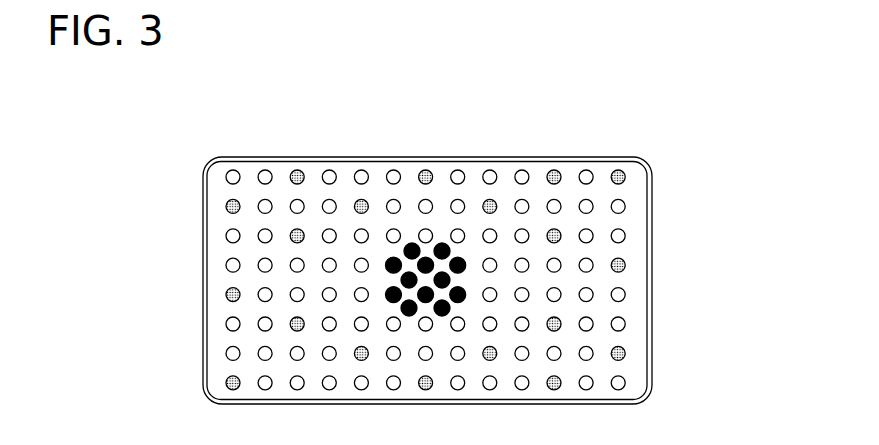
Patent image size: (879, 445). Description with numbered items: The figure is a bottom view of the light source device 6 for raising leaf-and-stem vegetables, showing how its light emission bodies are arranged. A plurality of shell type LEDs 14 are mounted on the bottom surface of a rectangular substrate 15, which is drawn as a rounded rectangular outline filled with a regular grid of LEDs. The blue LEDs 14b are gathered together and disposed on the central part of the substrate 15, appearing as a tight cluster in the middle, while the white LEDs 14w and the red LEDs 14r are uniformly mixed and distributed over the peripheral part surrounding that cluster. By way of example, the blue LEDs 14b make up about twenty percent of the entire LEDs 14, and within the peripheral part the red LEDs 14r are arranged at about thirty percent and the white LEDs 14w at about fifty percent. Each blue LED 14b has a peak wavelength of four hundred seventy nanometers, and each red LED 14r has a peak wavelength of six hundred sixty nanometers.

The light source device 6 is at (205, 148).
The shell type LEDs 14 is at (483, 112).
The white LEDs 14w is at (270, 229).
The blue LEDs 14b is at (407, 247).
The red LEDs 14r is at (492, 197).
The substrate 15 is at (638, 220).